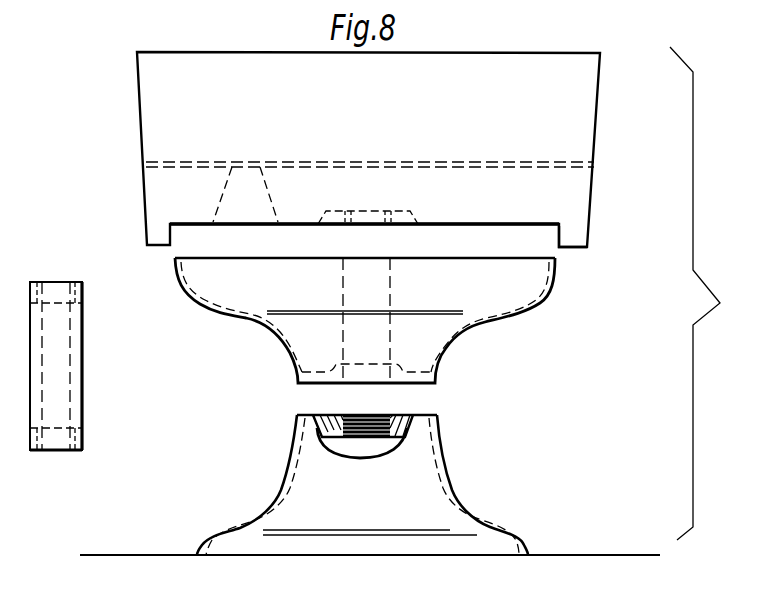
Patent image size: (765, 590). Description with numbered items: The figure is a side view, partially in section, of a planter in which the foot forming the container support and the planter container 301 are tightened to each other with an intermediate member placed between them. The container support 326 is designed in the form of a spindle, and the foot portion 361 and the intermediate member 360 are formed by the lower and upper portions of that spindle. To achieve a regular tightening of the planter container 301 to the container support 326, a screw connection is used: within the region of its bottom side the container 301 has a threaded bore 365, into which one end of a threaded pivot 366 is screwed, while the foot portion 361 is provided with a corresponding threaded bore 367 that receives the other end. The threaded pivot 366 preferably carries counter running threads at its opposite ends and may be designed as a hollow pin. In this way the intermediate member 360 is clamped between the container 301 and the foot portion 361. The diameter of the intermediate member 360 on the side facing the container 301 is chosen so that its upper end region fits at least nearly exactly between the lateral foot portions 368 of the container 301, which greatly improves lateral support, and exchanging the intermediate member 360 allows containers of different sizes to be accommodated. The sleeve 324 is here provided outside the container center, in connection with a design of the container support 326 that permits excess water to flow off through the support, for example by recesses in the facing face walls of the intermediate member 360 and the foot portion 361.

The planter container 301 is at (600, 120).
The sleeve 324 is at (275, 198).
The threaded bore 365 is at (377, 227).
The lateral foot portions 368 is at (575, 240).
The intermediate member 360 is at (527, 310).
The threaded bore 367 is at (370, 415).
The container support 326 is at (450, 420).
The foot portion 361 is at (440, 503).
The threaded pivot 366 is at (75, 357).